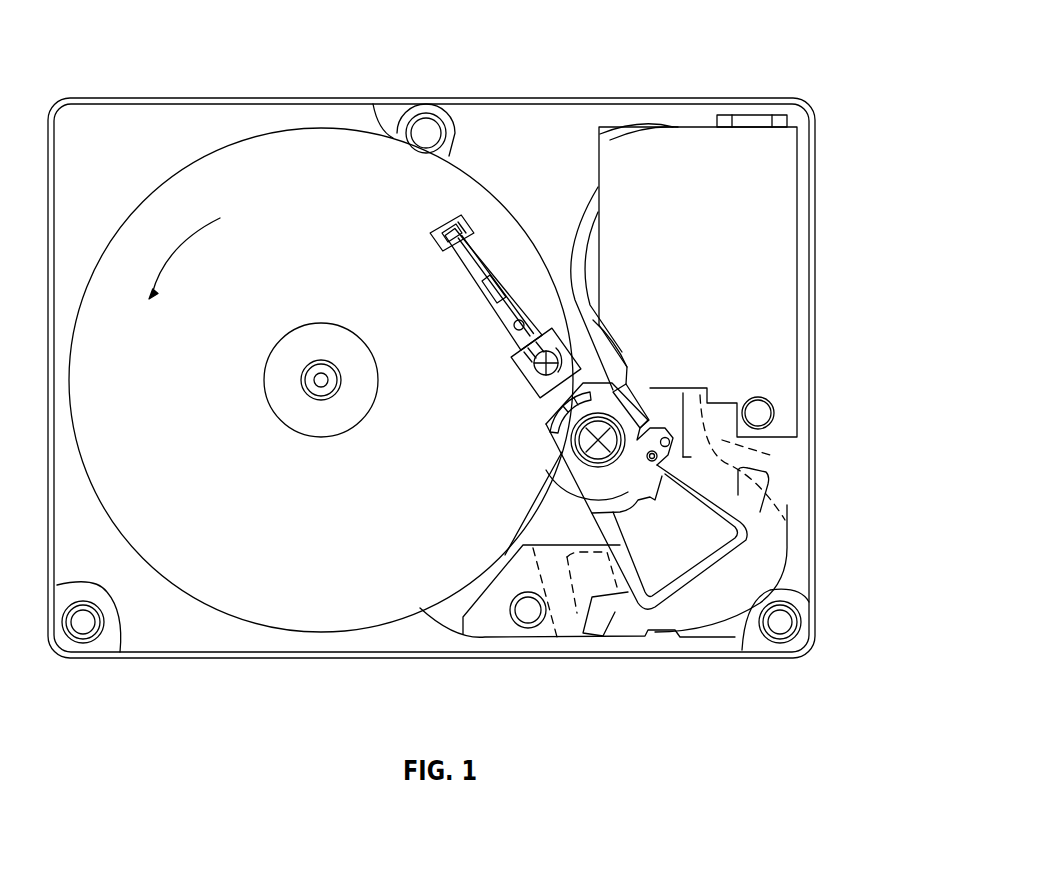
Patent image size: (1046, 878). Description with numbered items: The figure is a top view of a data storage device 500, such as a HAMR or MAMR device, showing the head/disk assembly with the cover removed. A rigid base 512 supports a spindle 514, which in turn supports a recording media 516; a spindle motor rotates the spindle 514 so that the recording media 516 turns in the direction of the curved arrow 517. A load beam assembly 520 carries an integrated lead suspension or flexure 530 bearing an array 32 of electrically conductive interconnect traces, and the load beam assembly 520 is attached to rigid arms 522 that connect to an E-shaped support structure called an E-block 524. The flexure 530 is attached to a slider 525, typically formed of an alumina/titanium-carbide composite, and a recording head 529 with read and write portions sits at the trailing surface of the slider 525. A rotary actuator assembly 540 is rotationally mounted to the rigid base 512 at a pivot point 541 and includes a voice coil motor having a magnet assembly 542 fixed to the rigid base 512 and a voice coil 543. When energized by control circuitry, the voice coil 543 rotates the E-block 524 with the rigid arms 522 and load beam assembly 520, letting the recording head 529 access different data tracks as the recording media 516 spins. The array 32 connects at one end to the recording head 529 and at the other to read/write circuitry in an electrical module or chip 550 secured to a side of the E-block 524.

The data storage device 500 is at (131, 37).
The rigid base 512 is at (205, 660).
The spindle 514 is at (280, 348).
The recording media 516 is at (307, 617).
The curved arrow 517 is at (192, 243).
The load beam assembly 520 is at (478, 288).
The rigid arms 522 is at (525, 372).
The E-block 524 is at (555, 430).
The slider 525 is at (470, 225).
The recording head 529 is at (447, 228).
The flexure 530 is at (470, 243).
The array of electrically conductive interconnect traces 32 is at (492, 288).
The rotary actuator assembly 540 is at (674, 510).
The pivot point 541 is at (560, 460).
The magnet assembly 542 is at (712, 408).
The voice coil 543 is at (745, 527).
The electrical module or chip 550 is at (640, 402).